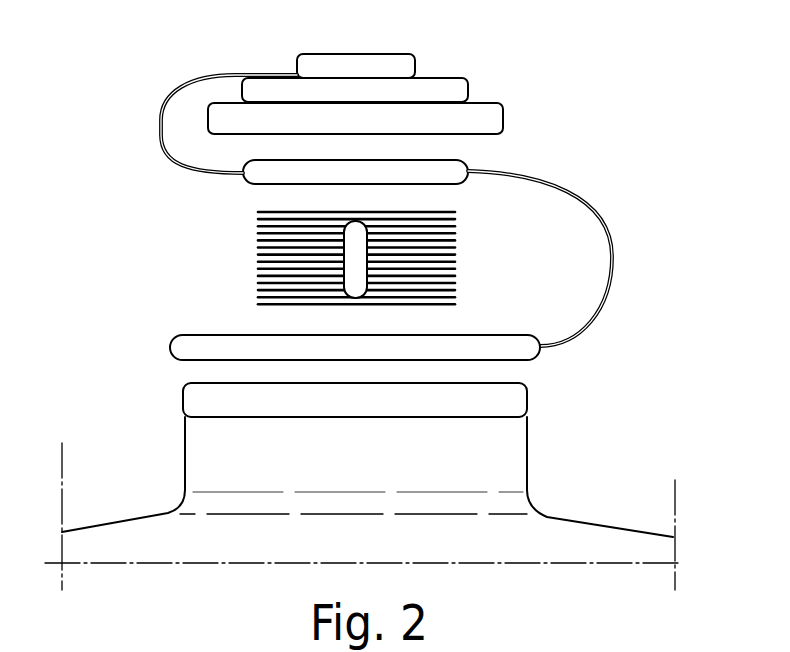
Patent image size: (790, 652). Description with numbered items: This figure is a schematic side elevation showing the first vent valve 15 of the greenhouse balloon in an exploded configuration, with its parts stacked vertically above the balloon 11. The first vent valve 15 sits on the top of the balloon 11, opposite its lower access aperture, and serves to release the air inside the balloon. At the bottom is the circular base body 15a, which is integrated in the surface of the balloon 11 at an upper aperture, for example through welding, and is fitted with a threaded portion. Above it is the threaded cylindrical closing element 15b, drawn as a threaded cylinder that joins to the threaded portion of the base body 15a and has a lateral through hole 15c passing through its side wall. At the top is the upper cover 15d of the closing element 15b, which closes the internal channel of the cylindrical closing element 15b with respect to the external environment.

The balloon 11 is at (577, 535).
The first vent valve 15 is at (693, 102).
The circular base body 15a is at (507, 437).
The threaded cylindrical closing element 15b is at (455, 260).
The lateral through hole 15c is at (350, 262).
The upper cover 15d is at (432, 87).